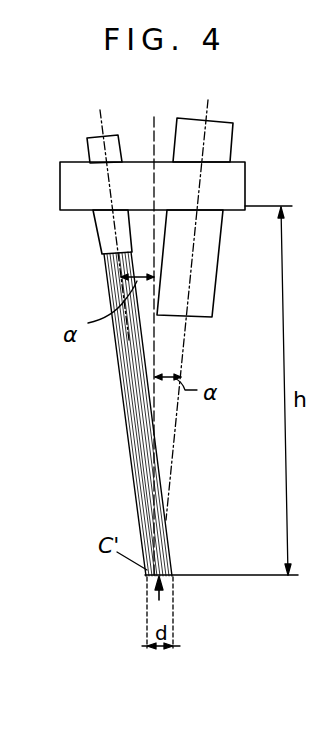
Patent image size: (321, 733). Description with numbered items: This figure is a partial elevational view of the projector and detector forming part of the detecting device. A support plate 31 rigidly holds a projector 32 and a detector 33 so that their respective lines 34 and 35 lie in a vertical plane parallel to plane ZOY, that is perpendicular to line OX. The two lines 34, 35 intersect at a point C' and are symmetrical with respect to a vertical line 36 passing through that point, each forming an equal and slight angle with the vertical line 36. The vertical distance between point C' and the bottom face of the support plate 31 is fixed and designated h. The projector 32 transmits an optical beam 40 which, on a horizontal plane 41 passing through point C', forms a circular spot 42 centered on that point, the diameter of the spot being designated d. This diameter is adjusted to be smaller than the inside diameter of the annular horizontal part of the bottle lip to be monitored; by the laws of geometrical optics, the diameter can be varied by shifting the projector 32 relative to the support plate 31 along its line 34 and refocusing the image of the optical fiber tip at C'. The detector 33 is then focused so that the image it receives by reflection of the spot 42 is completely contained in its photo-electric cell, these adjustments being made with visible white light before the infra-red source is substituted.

The support plate 31 is at (76, 177).
The projector 32 is at (103, 230).
The detector 33 is at (223, 140).
The line of the projector 34 is at (100, 110).
The line of the detector 35 is at (173, 457).
The vertical line 36 is at (157, 350).
The optical beam 40 is at (133, 415).
The horizontal plane 41 is at (237, 573).
The spot 42 is at (168, 567).